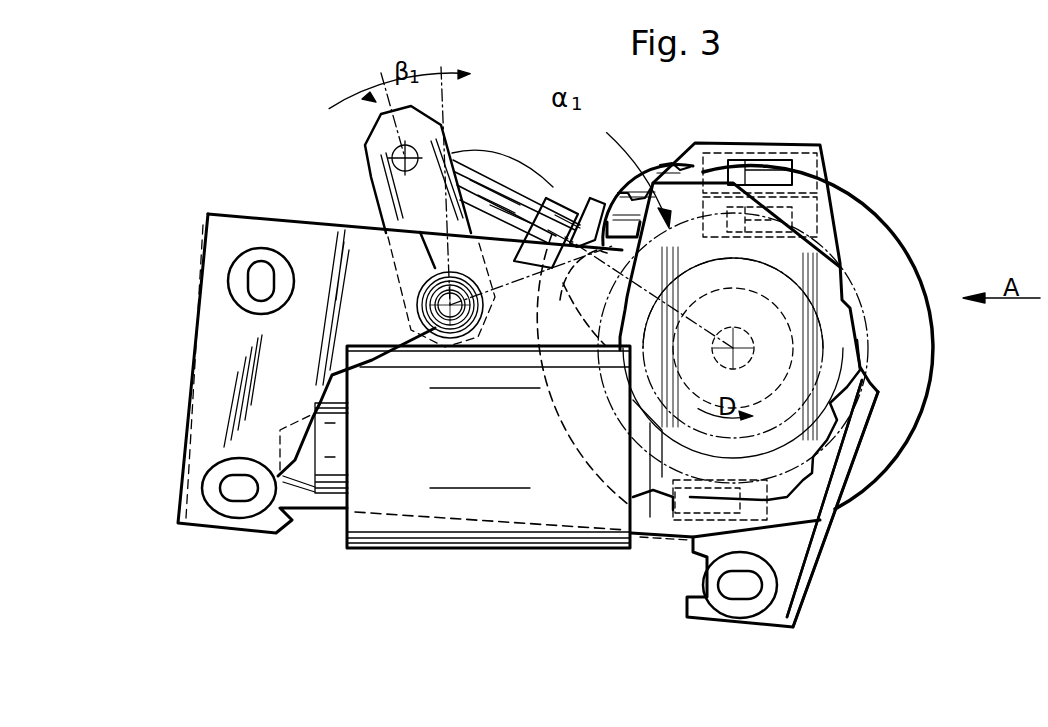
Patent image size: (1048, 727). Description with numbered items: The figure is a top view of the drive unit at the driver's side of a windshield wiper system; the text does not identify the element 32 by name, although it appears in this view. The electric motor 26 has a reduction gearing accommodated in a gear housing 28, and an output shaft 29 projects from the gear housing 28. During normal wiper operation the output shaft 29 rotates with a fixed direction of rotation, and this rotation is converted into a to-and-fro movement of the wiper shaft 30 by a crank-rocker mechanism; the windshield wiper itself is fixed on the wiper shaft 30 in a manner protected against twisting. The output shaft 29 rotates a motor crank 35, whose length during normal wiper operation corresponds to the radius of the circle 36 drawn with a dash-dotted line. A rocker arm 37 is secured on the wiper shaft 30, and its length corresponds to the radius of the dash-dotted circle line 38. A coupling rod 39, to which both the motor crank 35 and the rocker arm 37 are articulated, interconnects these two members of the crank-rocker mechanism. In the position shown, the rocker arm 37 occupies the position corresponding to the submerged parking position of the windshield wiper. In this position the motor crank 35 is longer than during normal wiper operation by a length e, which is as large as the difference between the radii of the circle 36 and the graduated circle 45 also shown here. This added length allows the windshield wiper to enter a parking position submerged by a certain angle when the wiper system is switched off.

The electric motor 26 is at (482, 537).
The gear housing 28 is at (830, 375).
The output shaft 29 is at (750, 365).
The wiper shaft 30 is at (438, 305).
The mounting plate 32 is at (225, 345).
The motor crank 35 is at (703, 331).
The circle 36 is at (803, 288).
The rocker arm 37 is at (395, 207).
The circle line 38 is at (478, 153).
The coupling rod 39 is at (520, 200).
The graduated circle 45 is at (800, 432).